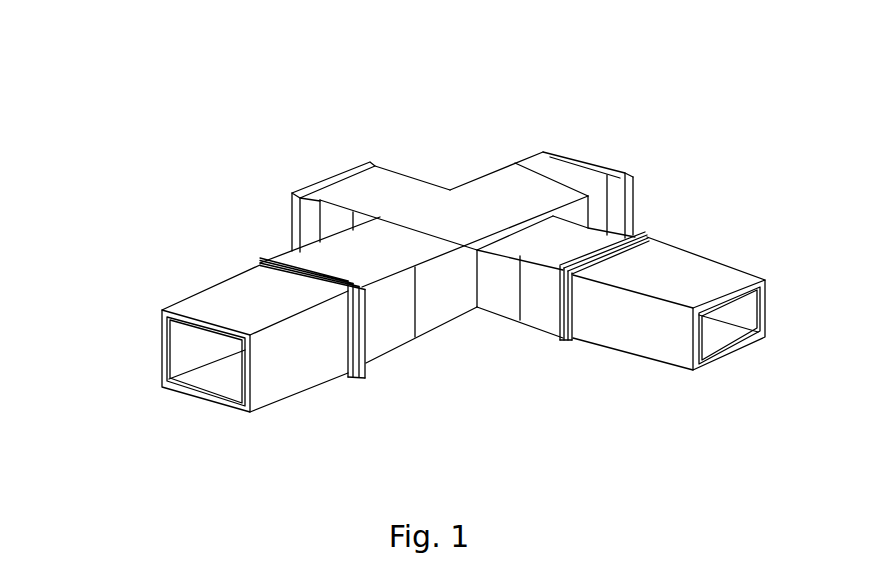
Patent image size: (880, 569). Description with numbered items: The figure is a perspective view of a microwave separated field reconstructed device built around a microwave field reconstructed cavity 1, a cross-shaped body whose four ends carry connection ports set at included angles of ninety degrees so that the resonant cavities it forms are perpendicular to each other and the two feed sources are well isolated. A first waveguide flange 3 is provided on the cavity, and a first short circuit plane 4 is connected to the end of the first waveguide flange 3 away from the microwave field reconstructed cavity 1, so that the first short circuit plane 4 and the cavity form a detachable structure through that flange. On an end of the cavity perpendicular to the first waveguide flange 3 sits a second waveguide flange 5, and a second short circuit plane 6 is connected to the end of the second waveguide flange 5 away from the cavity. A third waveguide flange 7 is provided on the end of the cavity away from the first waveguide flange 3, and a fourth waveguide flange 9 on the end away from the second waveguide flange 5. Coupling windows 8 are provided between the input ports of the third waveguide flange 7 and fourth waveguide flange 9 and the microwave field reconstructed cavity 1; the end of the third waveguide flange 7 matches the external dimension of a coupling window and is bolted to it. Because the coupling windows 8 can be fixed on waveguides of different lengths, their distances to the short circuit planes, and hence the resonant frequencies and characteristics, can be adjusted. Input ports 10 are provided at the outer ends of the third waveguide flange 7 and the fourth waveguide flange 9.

The microwave field reconstructed cavity 1 is at (455, 272).
The first waveguide flange 3 is at (391, 186).
The first short circuit plane 4 is at (340, 173).
The second waveguide flange 5 is at (517, 163).
The second short circuit plane 6 is at (582, 164).
The third waveguide flange 7 is at (645, 273).
The coupling windows 8 is at (566, 300).
The fourth waveguide flange 9 is at (290, 251).
The input ports 10 is at (150, 341).